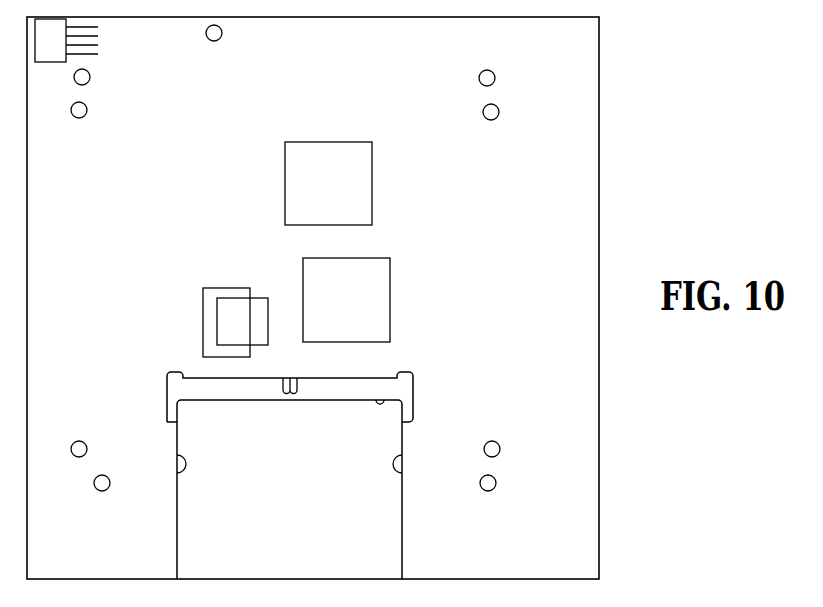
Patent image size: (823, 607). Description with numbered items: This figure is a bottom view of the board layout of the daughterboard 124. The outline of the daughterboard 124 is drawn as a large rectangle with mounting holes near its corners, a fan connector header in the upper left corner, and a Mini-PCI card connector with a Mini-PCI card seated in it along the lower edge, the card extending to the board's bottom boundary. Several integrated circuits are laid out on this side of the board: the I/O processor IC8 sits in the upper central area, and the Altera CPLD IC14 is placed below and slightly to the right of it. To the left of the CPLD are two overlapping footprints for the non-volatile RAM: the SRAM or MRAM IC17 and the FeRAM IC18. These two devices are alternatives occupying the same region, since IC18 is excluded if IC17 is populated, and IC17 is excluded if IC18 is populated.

The daughterboard 124 is at (367, 298).
The I/O processor IC8 is at (328, 183).
The Altera CPLD IC14 is at (346, 300).
The SRAM or MRAM for NVRAM IC17 is at (214, 322).
The FeRAM for NVRAM IC18 is at (255, 321).